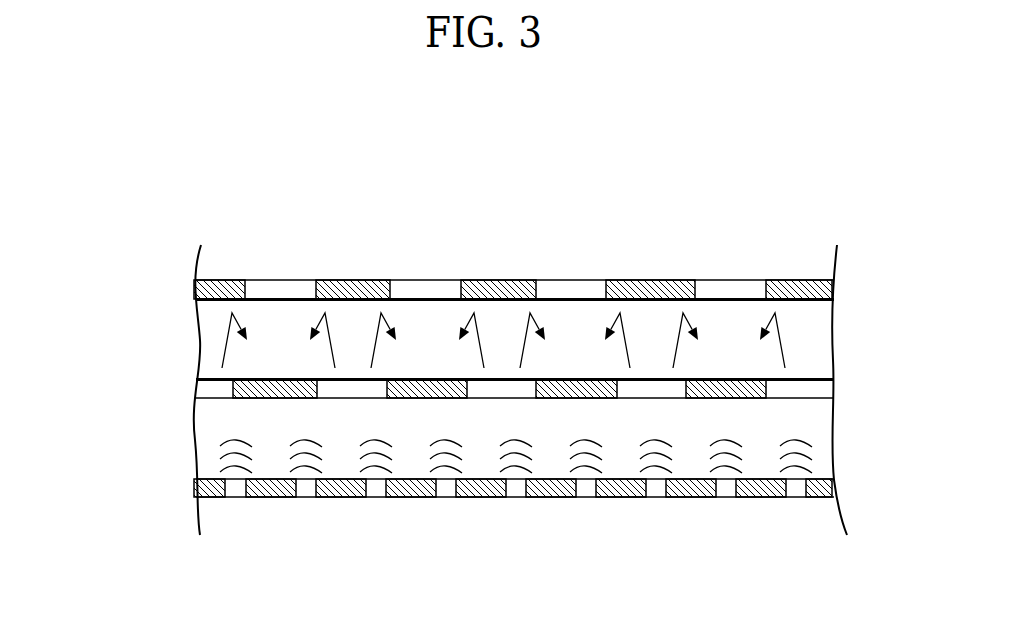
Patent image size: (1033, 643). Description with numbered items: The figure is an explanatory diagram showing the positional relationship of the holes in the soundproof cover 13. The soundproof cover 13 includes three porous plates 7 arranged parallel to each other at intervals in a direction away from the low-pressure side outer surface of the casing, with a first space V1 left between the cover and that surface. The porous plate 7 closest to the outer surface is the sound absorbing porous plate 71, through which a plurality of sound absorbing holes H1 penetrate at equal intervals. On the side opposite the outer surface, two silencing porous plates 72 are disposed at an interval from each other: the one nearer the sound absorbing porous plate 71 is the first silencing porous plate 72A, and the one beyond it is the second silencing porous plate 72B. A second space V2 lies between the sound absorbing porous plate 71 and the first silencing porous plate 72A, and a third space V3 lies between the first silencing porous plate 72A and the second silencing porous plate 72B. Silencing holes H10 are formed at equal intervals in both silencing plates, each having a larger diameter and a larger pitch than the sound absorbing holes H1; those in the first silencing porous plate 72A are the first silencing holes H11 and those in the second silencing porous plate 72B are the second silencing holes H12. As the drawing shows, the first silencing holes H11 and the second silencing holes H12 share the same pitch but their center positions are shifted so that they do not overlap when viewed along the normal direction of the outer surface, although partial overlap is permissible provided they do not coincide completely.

The soundproof cover 13 is at (267, 157).
The porous plate 7 is at (439, 428).
The silencing porous plate 72 is at (439, 338).
The second silencing porous plate 72B is at (206, 290).
The first silencing porous plate 72A is at (206, 391).
The sound absorbing porous plate 71 is at (194, 492).
The sound absorbing hole H1 is at (385, 497).
The silencing hole H10 is at (672, 187).
The first silencing hole H11 is at (317, 379).
The second silencing hole H12 is at (389, 280).
The first space V1 is at (822, 530).
The second space V2 is at (817, 428).
The third space V3 is at (812, 345).